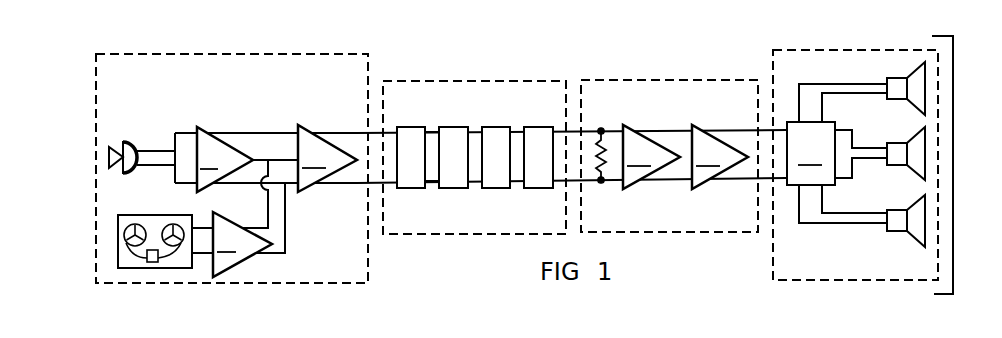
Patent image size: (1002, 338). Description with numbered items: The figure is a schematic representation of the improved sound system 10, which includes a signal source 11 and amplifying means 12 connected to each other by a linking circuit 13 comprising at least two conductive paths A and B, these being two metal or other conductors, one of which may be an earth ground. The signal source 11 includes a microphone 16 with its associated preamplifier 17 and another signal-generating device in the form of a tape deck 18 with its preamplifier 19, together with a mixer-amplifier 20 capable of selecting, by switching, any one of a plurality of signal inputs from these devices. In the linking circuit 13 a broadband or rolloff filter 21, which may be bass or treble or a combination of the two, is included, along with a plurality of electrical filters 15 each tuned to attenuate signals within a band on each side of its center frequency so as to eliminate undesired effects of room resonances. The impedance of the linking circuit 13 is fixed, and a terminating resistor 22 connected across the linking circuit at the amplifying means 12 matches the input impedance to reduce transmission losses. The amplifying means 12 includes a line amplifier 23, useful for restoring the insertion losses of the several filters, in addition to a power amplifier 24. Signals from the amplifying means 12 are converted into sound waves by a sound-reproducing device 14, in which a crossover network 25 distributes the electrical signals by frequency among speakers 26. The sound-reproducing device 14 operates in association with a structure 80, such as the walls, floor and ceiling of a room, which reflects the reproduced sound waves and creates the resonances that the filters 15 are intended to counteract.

The sound system 10 is at (533, 61).
The signal source 11 is at (193, 49).
The amplifying means 12 is at (660, 72).
The linking circuit 13 is at (451, 74).
The sound-reproducing device 14 is at (829, 43).
The electrical filters 15 is at (535, 127).
The microphone 16 is at (124, 143).
The preamplifier 17 is at (225, 159).
The tape deck 18 is at (155, 215).
The preamplifier 19 is at (242, 244).
The mixer-amplifier 20 is at (327, 158).
The broadband filter 21 is at (408, 127).
The terminating resistor 22 is at (603, 145).
The line amplifier 23 is at (651, 157).
The power amplifier 24 is at (720, 157).
The crossover network 25 is at (811, 153).
The speakers 26 is at (900, 100).
The structure 80 is at (955, 274).
The conductive path A is at (432, 132).
The conductive path B is at (432, 188).